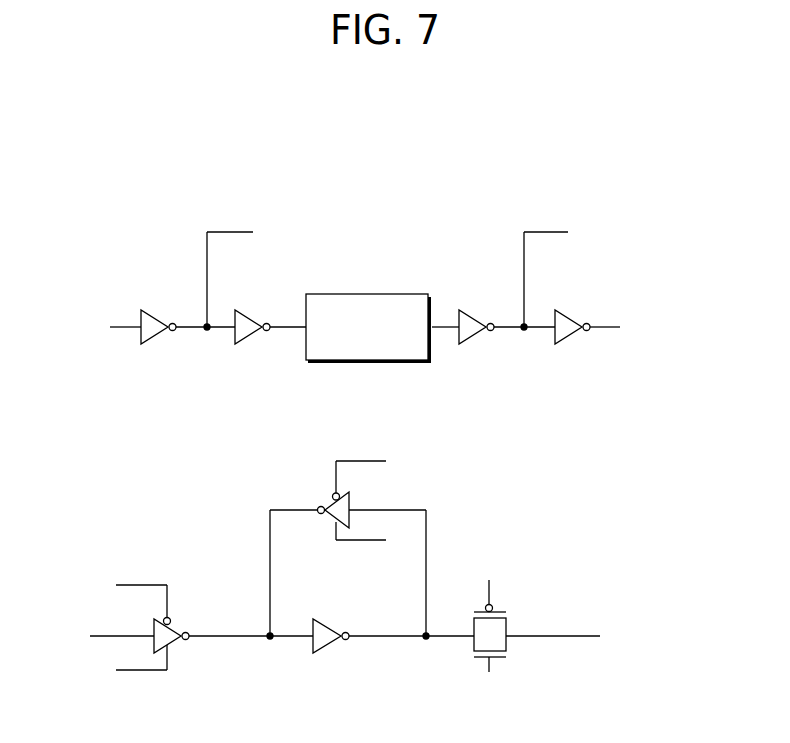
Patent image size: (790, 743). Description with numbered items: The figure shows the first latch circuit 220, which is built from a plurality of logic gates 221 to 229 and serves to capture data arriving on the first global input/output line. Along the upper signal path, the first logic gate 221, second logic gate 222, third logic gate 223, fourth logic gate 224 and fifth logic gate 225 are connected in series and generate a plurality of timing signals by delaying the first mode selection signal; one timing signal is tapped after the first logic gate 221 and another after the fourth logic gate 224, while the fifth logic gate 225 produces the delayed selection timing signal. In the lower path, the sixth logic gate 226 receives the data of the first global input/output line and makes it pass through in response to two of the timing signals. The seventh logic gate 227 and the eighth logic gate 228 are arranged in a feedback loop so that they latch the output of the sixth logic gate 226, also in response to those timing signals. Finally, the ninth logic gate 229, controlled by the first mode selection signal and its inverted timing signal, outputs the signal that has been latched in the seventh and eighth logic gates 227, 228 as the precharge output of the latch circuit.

The first latch circuit 220 is at (100, 165).
The first logic gate 221 is at (167, 298).
The second logic gate 222 is at (263, 298).
The third logic gate 223 is at (398, 292).
The fourth logic gate 224 is at (486, 298).
The fifth logic gate 225 is at (583, 298).
The sixth logic gate 226 is at (177, 622).
The seventh logic gate 227 is at (338, 627).
The eighth logic gate 228 is at (350, 494).
The ninth logic gate 229 is at (508, 618).